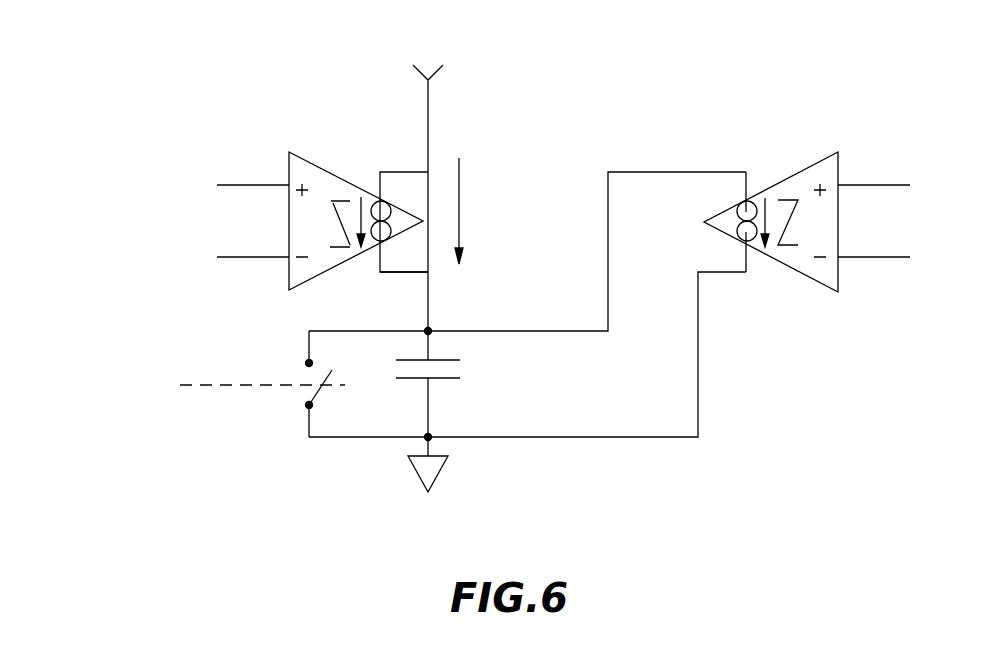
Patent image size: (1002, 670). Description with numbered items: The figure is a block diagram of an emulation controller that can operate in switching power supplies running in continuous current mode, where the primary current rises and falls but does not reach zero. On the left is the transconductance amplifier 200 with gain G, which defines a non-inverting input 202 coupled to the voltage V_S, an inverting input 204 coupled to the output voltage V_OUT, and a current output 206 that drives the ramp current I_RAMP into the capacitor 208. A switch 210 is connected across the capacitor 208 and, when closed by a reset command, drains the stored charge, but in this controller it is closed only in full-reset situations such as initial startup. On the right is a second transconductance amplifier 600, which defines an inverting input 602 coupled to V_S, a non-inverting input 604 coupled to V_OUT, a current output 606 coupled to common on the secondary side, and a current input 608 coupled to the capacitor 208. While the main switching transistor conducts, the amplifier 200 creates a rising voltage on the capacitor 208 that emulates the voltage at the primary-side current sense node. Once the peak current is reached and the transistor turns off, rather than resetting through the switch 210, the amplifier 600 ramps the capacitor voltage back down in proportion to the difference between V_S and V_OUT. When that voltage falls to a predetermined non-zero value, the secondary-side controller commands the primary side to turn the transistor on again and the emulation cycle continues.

The transconductance amplifier 200 is at (331, 94).
The non-inverting input 202 is at (289, 183).
The inverting input 204 is at (289, 258).
The current output 206 is at (430, 280).
The capacitor 208 is at (444, 378).
The switch 210 is at (292, 397).
The transconductance amplifier 600 is at (784, 148).
The inverting input 602 is at (838, 257).
The non-inverting input 604 is at (838, 185).
The current output 606 is at (748, 263).
The current input 608 is at (752, 172).